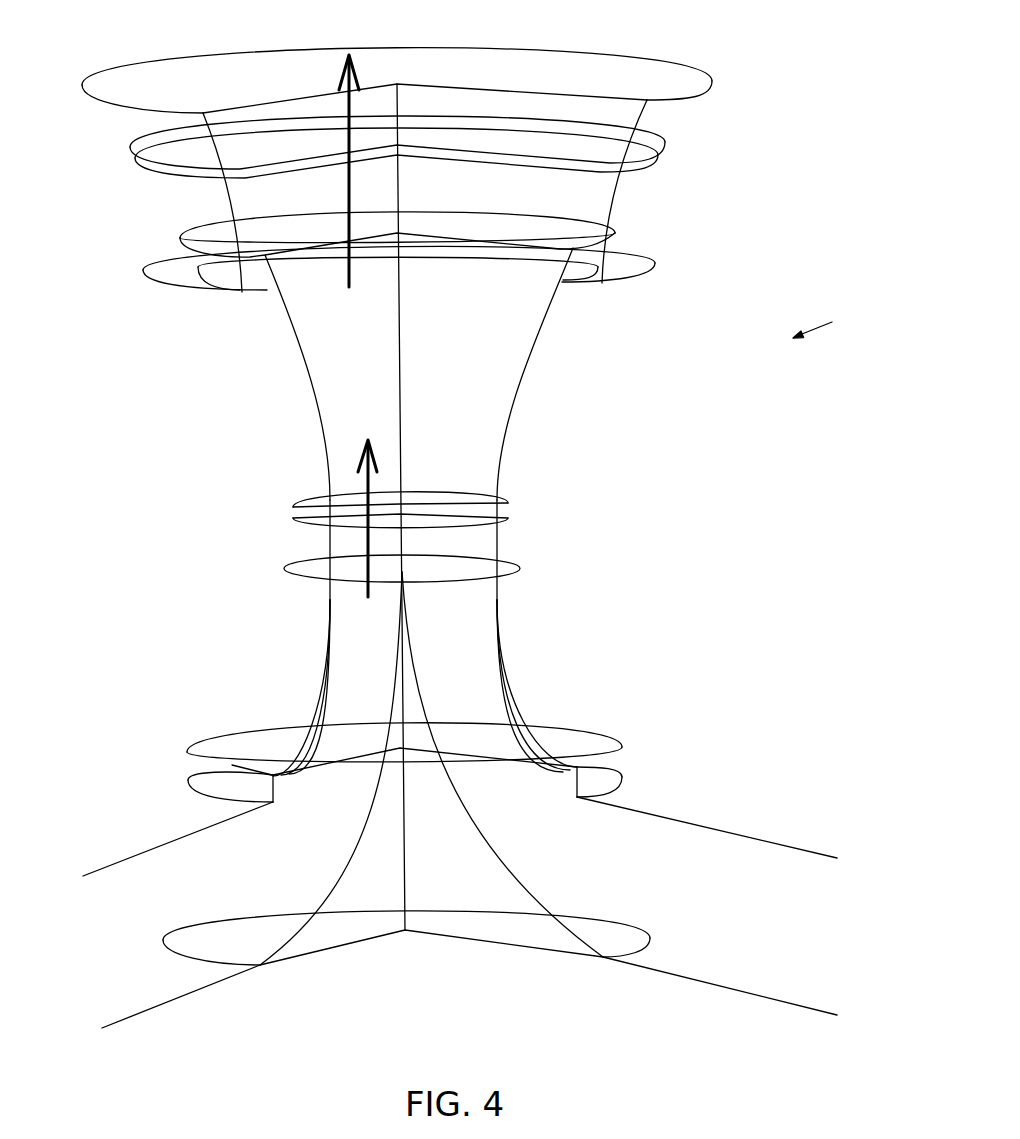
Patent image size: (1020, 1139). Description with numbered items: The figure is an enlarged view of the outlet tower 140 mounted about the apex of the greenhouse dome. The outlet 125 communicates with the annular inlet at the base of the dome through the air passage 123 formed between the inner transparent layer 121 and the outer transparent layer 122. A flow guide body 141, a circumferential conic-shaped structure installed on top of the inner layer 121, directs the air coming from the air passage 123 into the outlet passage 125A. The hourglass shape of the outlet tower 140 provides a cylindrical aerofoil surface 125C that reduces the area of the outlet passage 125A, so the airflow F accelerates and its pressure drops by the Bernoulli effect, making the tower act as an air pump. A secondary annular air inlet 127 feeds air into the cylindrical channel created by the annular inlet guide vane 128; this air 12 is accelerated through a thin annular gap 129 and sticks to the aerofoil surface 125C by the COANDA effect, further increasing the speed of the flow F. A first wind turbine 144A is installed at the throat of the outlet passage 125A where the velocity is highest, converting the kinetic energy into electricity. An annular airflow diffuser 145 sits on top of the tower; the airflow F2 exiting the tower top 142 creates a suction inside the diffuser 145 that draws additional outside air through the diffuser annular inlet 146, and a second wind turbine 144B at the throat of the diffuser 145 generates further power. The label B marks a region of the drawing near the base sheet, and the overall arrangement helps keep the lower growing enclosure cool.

The air 12 is at (470, 342).
The inner transparent layer 121 is at (763, 990).
The outer transparent layer 122 is at (795, 845).
The air passage 123 is at (726, 903).
The outlet 125 is at (533, 68).
The outlet passage 125A is at (440, 438).
The aerofoil surface 125C is at (320, 450).
The secondary annular air inlet 127 is at (603, 778).
The annular inlet guide vane 128 is at (320, 713).
The thin annular gap 129 is at (498, 577).
The outlet tower 140 is at (833, 321).
The flow guide body 141 is at (343, 873).
The tower top 142 is at (553, 233).
The first wind turbine 144A is at (510, 508).
The second wind turbine 144B is at (665, 142).
The annular airflow diffuser 145 is at (613, 190).
The diffuser annular inlet 146 is at (253, 293).
The airflow F is at (367, 502).
The airflow exiting tower top F2 is at (345, 188).
The base plane B is at (113, 862).